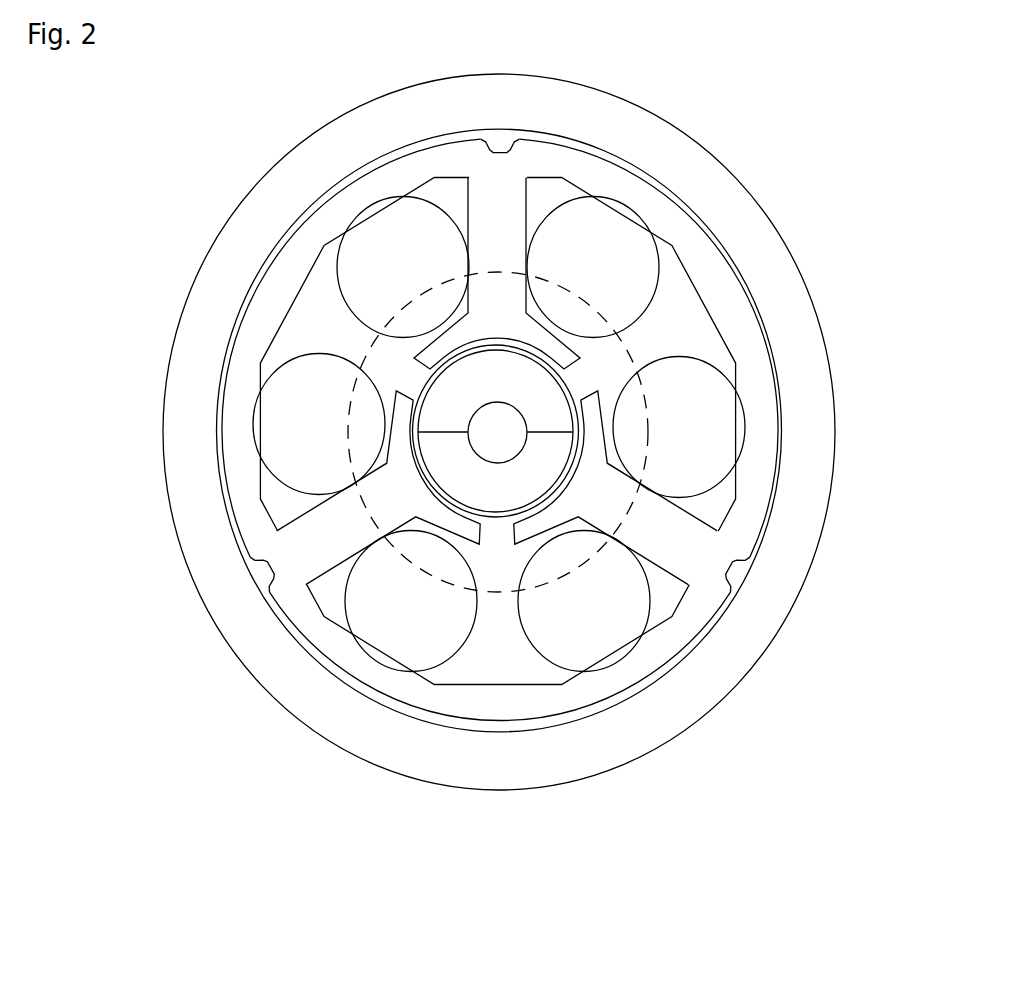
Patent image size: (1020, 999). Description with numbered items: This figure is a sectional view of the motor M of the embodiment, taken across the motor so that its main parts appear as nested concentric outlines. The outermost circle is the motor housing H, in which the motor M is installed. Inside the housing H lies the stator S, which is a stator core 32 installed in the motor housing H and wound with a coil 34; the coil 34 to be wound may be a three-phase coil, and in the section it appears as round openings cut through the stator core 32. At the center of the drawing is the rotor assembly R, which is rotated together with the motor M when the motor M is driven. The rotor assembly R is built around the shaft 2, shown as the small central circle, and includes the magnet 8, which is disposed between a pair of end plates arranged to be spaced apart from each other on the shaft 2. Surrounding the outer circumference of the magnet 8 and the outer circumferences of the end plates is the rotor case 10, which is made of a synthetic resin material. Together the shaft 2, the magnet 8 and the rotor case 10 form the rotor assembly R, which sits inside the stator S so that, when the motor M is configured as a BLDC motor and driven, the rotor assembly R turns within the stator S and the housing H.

The shaft 2 is at (500, 445).
The magnet 8 is at (459, 403).
The rotor case 10 is at (531, 540).
The stator core 32 is at (695, 241).
The coil 34 is at (600, 238).
The stator S is at (744, 579).
The motor housing H is at (746, 628).
The rotor assembly R is at (565, 460).
The motor M is at (182, 786).